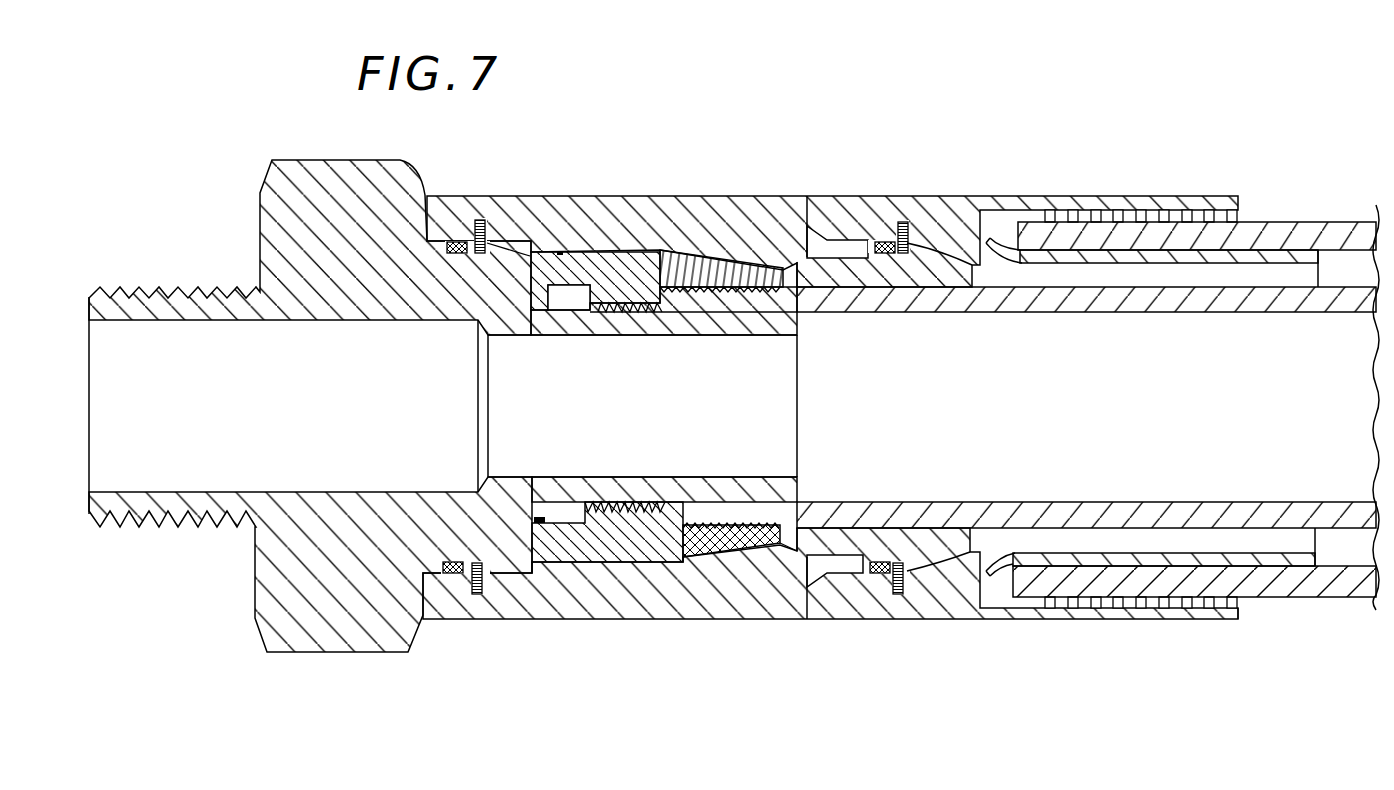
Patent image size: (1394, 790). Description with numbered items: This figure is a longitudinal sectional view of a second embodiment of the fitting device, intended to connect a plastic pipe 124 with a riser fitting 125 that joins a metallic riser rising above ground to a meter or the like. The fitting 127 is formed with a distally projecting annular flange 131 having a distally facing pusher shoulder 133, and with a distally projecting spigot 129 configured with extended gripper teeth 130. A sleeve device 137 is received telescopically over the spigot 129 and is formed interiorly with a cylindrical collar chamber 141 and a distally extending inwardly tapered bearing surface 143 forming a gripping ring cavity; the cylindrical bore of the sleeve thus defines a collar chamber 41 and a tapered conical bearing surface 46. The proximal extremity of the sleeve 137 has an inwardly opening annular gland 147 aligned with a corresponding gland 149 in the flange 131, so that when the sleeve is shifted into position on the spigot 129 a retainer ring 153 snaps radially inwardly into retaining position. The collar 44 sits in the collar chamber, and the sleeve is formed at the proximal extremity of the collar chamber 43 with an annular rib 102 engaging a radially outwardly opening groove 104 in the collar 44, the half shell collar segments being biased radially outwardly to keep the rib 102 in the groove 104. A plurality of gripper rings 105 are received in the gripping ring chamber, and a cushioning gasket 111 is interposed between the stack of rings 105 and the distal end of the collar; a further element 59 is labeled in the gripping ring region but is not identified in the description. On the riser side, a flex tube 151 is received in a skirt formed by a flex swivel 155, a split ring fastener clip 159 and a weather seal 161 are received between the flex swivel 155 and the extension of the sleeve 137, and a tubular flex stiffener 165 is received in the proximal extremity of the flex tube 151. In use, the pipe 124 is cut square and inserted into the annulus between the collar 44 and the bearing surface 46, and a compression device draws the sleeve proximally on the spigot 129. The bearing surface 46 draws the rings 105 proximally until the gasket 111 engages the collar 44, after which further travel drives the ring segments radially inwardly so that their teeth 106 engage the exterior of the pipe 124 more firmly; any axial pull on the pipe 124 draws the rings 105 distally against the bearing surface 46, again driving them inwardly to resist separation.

The fitting 127 is at (319, 656).
The sleeve device 137 is at (660, 185).
The annular gland 147 is at (483, 232).
The annular flange 131 is at (518, 240).
The pusher shoulder 133 is at (558, 254).
The collar chamber 43 is at (547, 300).
The collar 44 is at (570, 300).
The collar chamber 41 is at (593, 300).
The tapered conical bearing surface 46 is at (725, 300).
The tapered grip ring 59 is at (709, 246).
The teeth 106 is at (765, 310).
The spigot 129 is at (798, 402).
The weather seal 161 is at (873, 240).
The flex swivel 155 is at (903, 222).
The split ring fastener clip 159 is at (910, 240).
The retainer ring 153 is at (1115, 210).
The gland 149 is at (467, 572).
The riser fitting 125 is at (1279, 212).
The tubular flex stiffener 165 is at (1217, 265).
The plastic pipe 124 is at (1335, 300).
The flex tube 151 is at (1322, 598).
The cylindrical collar chamber 141 is at (607, 560).
The groove 104 is at (560, 565).
The gripper teeth 130 is at (630, 563).
The tapered bearing surface 143 is at (699, 555).
The annular rib 102 is at (573, 571).
The cushioning gasket 111 is at (680, 563).
The gripper rings 105 is at (745, 558).